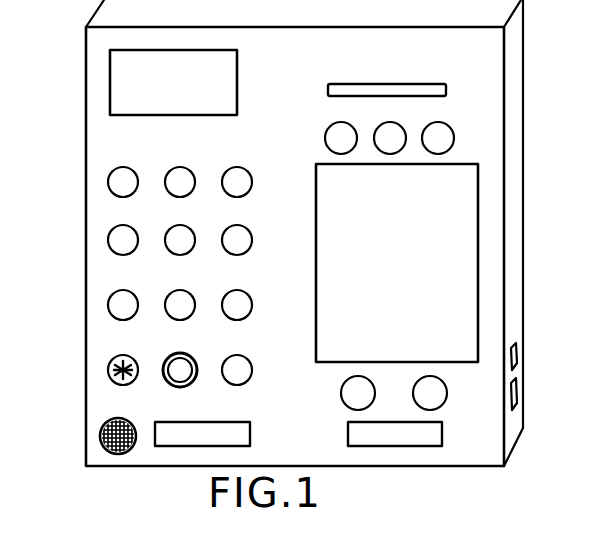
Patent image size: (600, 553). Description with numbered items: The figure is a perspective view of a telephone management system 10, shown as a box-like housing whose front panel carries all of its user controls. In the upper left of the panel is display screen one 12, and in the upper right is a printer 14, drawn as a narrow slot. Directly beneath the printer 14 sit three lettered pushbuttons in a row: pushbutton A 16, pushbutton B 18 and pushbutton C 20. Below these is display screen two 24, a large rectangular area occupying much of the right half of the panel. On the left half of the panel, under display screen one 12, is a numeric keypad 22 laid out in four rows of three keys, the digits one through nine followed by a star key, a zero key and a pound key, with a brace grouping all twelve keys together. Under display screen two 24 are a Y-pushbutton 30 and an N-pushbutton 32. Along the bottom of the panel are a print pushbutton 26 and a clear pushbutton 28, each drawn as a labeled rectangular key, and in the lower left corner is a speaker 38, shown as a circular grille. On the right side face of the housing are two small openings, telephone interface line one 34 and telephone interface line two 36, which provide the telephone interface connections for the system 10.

The telephone management system 10 is at (530, 252).
The display screen 1 12 is at (224, 75).
The printer 14 is at (447, 58).
The pushbutton A 16 is at (353, 126).
The pushbutton B 18 is at (400, 126).
The pushbutton C 20 is at (452, 126).
The numeric keypad 22 is at (260, 165).
The display screen 2 24 is at (385, 271).
The print pushbutton 26 is at (251, 432).
The clear pushbutton 28 is at (443, 436).
The Y-pushbutton 30 is at (341, 390).
The N-pushbutton 32 is at (446, 384).
The telephone interface line 1 34 is at (517, 348).
The telephone interface line 2 36 is at (513, 410).
The speaker 38 is at (99, 437).